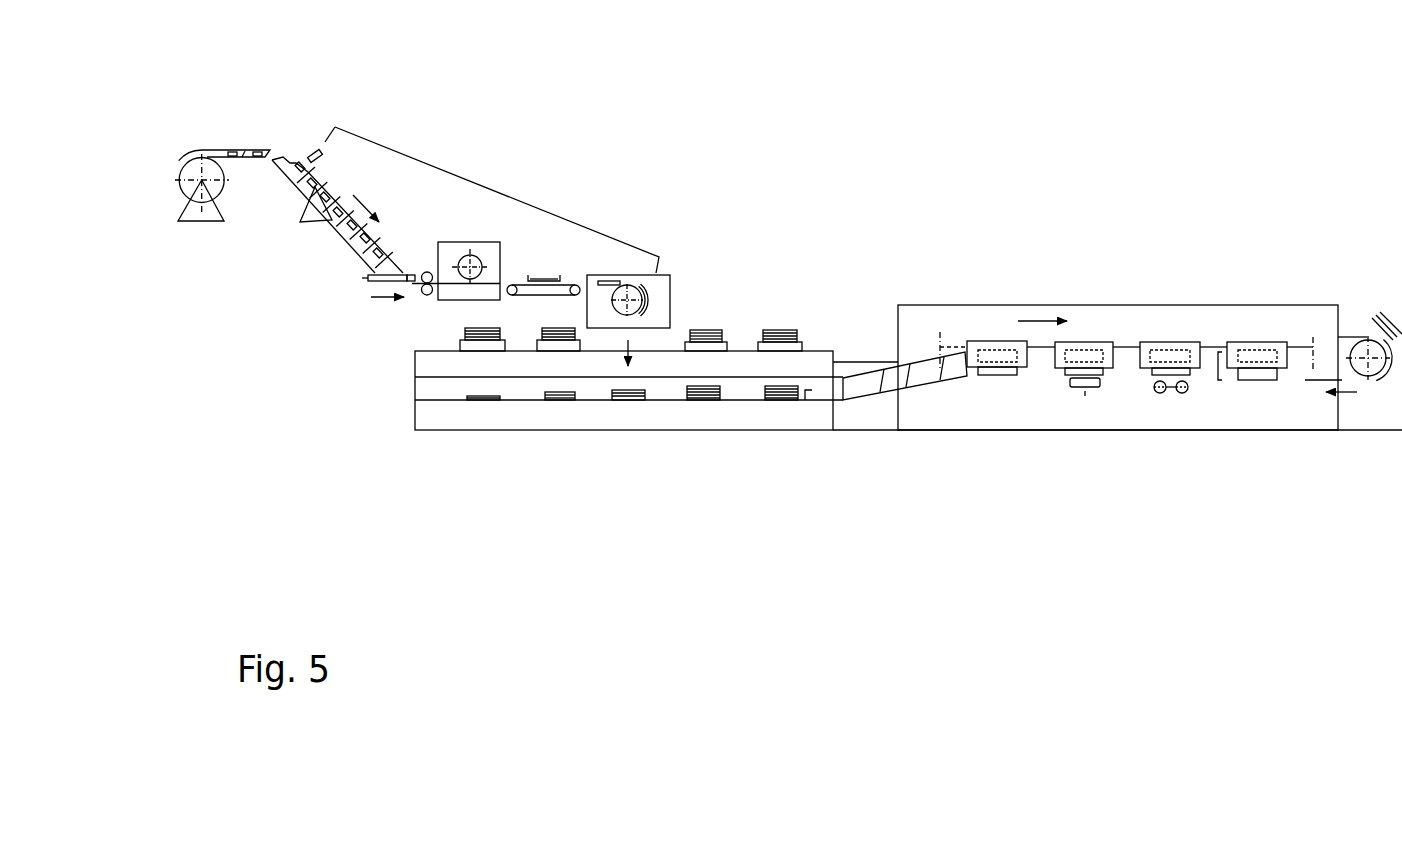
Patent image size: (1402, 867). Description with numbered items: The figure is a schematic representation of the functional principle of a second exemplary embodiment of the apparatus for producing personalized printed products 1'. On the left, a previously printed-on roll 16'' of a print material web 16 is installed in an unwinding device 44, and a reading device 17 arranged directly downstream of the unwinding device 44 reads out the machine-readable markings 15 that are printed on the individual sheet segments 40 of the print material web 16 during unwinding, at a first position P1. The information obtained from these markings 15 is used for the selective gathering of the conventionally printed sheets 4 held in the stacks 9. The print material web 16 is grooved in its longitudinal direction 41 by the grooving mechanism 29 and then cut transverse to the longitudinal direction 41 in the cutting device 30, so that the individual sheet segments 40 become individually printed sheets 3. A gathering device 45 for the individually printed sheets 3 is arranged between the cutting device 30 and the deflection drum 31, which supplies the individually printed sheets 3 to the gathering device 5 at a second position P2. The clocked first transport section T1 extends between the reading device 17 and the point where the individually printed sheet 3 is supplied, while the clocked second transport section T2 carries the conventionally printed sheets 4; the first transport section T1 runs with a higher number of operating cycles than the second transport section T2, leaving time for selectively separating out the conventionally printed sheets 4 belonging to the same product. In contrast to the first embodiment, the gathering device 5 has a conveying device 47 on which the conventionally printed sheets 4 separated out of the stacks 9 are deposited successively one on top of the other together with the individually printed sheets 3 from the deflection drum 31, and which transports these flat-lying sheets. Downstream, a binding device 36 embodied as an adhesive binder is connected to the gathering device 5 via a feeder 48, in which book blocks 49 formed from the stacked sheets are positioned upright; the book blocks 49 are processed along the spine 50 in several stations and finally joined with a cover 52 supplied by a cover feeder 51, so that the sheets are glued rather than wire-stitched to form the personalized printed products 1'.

The roll 16'' is at (184, 132).
The print material web 16 is at (297, 176).
The marking 15 is at (258, 147).
The unwinding device 44 is at (188, 208).
The first position P1 is at (309, 136).
The reading device 17 is at (323, 153).
The individual sheet segment 40 is at (342, 240).
The longitudinal direction 41 is at (382, 298).
The grooving mechanism 29 is at (425, 272).
The cutting device 30 is at (490, 253).
The first transport section T1 is at (493, 193).
The gathering device 45 is at (545, 275).
The deflection drum 31 is at (633, 287).
The second position P2 is at (674, 266).
The stacks 9 is at (457, 325).
The conventionally printed sheets 4 is at (472, 398).
The individually printed sheet 3 is at (643, 303).
The gathering device 5 is at (617, 488).
The conveying device 47 is at (745, 400).
The second transport section T2 is at (417, 433).
The book block 49 is at (808, 400).
The feeder 48 is at (843, 390).
The binding device 36 is at (1177, 303).
The spine 50 is at (1002, 375).
The personalized printed product 1' is at (1175, 430).
The cover 52 is at (1242, 380).
The cover feeder 51 is at (1363, 373).